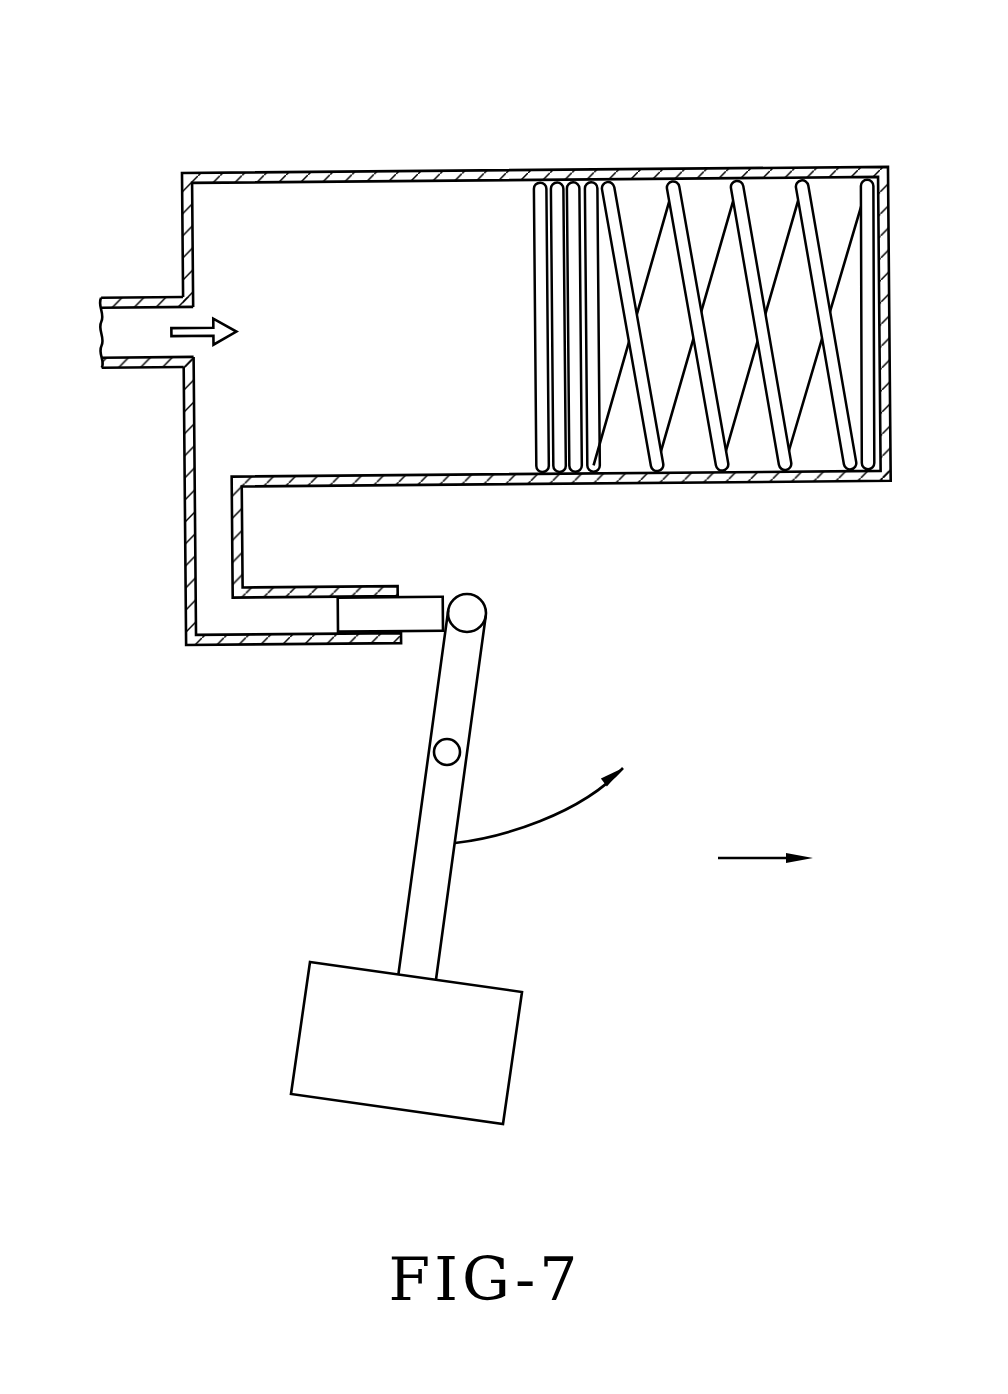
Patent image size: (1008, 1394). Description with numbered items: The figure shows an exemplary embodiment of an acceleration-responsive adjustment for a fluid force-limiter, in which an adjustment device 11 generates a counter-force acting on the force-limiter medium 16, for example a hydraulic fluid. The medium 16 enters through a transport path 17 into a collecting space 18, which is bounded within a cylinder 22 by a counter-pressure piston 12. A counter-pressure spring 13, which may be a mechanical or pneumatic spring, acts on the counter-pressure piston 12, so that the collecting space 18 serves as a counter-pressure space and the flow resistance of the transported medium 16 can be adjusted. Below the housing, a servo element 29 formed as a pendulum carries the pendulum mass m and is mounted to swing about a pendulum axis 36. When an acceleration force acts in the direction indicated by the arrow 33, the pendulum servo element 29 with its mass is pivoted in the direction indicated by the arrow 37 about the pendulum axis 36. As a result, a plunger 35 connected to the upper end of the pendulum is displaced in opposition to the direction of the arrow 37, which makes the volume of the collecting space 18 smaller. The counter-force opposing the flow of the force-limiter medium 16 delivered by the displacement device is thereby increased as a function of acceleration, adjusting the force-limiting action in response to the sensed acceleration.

The adjustment device 11 is at (485, 330).
The counter-pressure piston 12 is at (542, 237).
The counter-pressure spring 13 is at (753, 210).
The force-limiter medium 16 is at (318, 349).
The transport path 17 is at (135, 328).
The collecting space 18 is at (297, 228).
The cylinder 22 is at (648, 483).
The servo element 29 is at (320, 1027).
The arrow 33 is at (745, 857).
The plunger 35 is at (395, 613).
The pendulum axis 36 is at (442, 747).
The arrow 37 is at (545, 827).